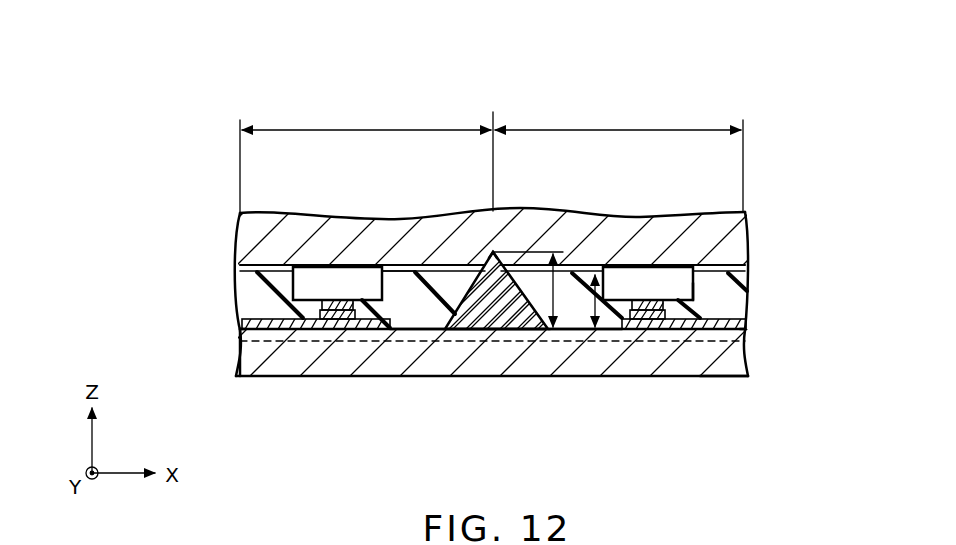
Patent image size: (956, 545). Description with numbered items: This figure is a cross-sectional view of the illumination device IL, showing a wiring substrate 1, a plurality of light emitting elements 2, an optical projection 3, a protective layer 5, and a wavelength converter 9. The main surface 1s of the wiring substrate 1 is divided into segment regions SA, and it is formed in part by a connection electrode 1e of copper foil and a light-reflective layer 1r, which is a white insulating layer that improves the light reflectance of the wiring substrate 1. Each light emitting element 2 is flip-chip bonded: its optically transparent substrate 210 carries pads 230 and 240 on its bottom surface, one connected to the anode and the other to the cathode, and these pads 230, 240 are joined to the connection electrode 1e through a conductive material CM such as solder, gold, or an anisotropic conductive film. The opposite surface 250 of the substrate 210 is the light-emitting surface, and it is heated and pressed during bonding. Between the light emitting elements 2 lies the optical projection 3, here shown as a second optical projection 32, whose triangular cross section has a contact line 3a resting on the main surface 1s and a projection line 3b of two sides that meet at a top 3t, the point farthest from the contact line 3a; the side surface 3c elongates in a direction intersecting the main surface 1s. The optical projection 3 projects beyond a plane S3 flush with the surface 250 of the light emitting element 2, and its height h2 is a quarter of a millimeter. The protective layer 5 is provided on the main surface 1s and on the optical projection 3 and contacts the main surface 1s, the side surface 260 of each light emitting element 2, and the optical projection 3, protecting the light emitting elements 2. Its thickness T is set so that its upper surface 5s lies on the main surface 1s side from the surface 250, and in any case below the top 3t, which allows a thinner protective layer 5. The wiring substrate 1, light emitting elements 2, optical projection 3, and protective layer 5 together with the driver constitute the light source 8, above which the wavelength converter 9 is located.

The wiring substrate 1 is at (380, 380).
The connection electrode 1e is at (261, 330).
The light-reflective layer 1r is at (727, 331).
The main surface 1s is at (571, 331).
The light emitting element 2 is at (294, 258).
The optical projection 3 is at (523, 354).
The second optical projection 32 is at (506, 305).
The contact line 3a is at (470, 337).
The projection line 3b is at (487, 251).
The side surface 3c is at (429, 284).
The top 3t is at (492, 262).
The protective layer 5 is at (262, 303).
The upper surface 5s is at (429, 330).
The light source 8 is at (230, 374).
The wavelength converter 9 is at (243, 232).
The substrate 210 is at (303, 287).
The pad 230 is at (336, 308).
The pad 240 is at (648, 308).
The surface 250 is at (367, 270).
The side surface 260 is at (695, 288).
The conductive material CM is at (340, 319).
The segment region SA is at (491, 159).
The illumination device IL is at (771, 177).
The thickness T is at (593, 331).
The height h2 is at (554, 253).
The plane S3 is at (419, 270).